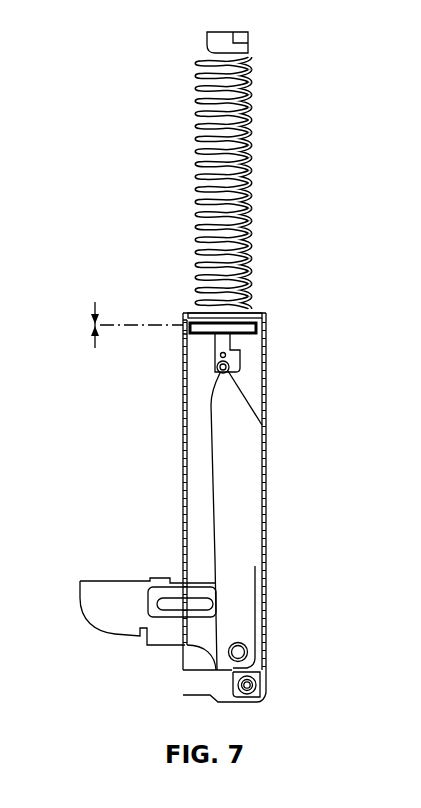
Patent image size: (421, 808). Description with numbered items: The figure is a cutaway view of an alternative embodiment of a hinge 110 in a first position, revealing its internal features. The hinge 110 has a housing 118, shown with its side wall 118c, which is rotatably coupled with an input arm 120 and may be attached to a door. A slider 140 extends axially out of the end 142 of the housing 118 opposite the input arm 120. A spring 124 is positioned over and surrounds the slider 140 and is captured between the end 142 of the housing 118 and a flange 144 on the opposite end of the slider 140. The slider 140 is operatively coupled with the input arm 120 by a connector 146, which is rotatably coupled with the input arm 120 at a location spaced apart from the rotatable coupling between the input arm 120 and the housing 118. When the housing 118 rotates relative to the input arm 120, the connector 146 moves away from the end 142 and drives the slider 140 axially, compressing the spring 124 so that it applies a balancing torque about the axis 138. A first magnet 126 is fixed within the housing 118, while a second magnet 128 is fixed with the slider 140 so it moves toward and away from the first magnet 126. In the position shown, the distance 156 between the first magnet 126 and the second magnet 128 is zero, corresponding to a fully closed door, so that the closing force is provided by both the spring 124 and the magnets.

The hinge 110 is at (128, 37).
The housing 118 is at (267, 623).
The housing side wall 118c is at (267, 512).
The input arm 120 is at (107, 590).
The spring 124 is at (248, 118).
The first magnet 126 is at (263, 327).
The second magnet 128 is at (183, 338).
The axis 138 is at (260, 694).
The slider 140 is at (240, 238).
The end of housing 142 is at (261, 312).
The flange 144 is at (245, 42).
The connector 146 is at (250, 458).
The distance 156 is at (95, 315).